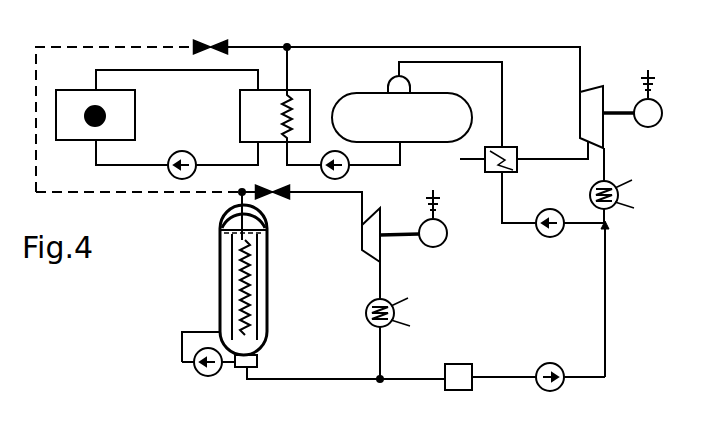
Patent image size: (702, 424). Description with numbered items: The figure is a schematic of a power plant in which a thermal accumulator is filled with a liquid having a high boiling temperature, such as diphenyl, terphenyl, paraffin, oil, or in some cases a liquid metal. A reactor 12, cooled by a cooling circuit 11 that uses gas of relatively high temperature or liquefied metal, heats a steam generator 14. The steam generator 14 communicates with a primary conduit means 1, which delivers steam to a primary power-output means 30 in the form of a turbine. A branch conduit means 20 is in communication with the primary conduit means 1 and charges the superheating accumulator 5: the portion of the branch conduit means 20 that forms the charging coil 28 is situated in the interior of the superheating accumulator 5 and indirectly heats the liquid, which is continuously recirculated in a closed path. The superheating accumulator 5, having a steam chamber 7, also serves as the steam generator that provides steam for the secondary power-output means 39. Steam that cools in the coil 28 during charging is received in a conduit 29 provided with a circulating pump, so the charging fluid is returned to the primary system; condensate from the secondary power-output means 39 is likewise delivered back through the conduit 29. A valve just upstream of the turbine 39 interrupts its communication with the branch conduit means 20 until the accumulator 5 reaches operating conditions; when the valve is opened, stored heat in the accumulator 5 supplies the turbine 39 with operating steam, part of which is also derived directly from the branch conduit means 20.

The primary conduit means 1 is at (347, 35).
The superheating accumulator 5 is at (393, 291).
The steam chamber 7 is at (256, 222).
The cooling circuit 11 is at (120, 165).
The reactor 12 is at (88, 73).
The steam generator 14 is at (258, 117).
The branch conduit means 20 is at (49, 48).
The charging coil 28 is at (242, 296).
The conduit 29 is at (605, 347).
The primary power-output means 30 is at (613, 65).
The secondary power-output means 39 is at (374, 227).